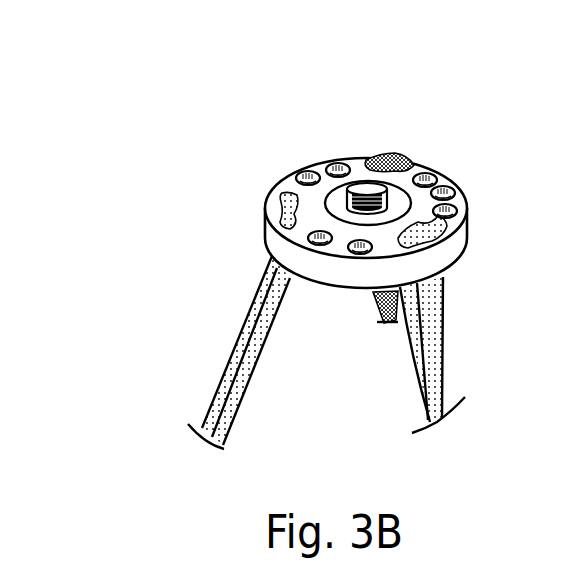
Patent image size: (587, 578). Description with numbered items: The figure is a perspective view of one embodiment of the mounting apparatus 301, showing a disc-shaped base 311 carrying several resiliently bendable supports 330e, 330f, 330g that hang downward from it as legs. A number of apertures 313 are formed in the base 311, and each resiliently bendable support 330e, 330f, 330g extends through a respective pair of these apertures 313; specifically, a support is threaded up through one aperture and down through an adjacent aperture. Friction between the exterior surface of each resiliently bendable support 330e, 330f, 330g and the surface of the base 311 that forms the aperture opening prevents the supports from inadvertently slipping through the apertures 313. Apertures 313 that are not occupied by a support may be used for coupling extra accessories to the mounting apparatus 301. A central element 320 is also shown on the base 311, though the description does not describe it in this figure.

The mounting apparatus 301 is at (100, 62).
The base 311 is at (263, 165).
The apertures 313 is at (453, 209).
The central cylinder 320 is at (360, 186).
The resiliently bendable support 330e is at (252, 362).
The resiliently bendable support 330f is at (437, 332).
The resiliently bendable support 330g is at (377, 305).